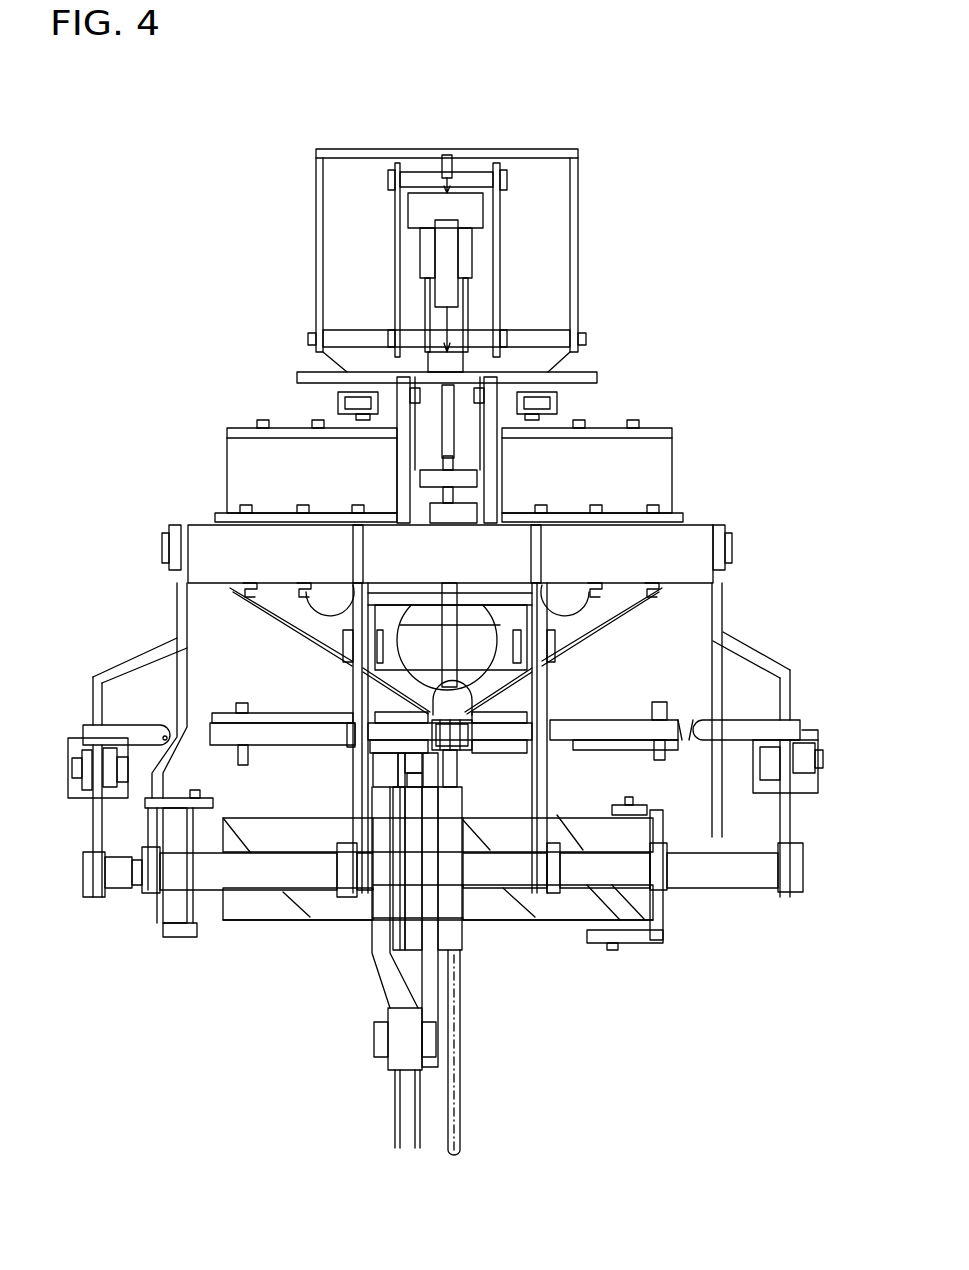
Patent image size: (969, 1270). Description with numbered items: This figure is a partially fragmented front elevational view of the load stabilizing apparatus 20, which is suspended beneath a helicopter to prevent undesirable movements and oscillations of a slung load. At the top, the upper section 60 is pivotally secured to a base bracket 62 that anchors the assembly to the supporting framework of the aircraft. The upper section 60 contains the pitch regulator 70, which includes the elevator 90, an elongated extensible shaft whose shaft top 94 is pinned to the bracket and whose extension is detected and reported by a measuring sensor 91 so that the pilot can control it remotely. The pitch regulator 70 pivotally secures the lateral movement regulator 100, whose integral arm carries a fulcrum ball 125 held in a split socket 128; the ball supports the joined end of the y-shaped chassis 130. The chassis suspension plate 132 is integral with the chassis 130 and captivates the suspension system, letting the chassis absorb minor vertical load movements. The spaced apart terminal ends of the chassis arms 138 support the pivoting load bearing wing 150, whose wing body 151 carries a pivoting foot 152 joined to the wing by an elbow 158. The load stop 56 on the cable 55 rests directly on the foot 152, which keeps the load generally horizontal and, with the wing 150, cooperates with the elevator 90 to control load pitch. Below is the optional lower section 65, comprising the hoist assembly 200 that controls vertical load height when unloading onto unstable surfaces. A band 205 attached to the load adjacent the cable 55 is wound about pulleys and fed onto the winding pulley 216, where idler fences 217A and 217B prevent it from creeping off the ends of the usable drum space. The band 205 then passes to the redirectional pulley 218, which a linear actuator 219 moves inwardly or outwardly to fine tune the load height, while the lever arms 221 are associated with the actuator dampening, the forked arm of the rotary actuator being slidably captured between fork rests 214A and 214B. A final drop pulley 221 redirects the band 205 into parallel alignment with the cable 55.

The apparatus 20 is at (108, 178).
The cable 55 is at (457, 1105).
The load stop 56 is at (433, 697).
The upper section 60 is at (641, 351).
The base bracket 62 is at (490, 150).
The lower section 65 is at (530, 970).
The pitch regulator 70 is at (556, 268).
The elevator 90 is at (400, 211).
The measuring sensor 91 is at (456, 257).
The shaft top 94 is at (424, 170).
The lateral movement regulator 100 is at (703, 449).
The fulcrum ball 125 is at (430, 503).
The split socket 128 is at (465, 515).
The chassis 130 is at (683, 553).
The chassis suspension plate 132 is at (238, 460).
The chassis arms 138 is at (190, 525).
The load bearing wing 150 is at (254, 627).
The wing body 151 is at (313, 640).
The pivoting foot 152 is at (560, 715).
The elbow 158 is at (508, 690).
The hoist assembly 200 is at (138, 965).
The band 205 is at (397, 1110).
The fork rest 214A is at (213, 742).
The fork rest 214B is at (656, 760).
The winding pulley 216 is at (567, 912).
The idler fence 217A is at (163, 807).
The idler fence 217B is at (652, 943).
The redirectional pulley 218 is at (463, 935).
The linear actuator 219 is at (462, 742).
The lever arms 221 is at (402, 1052).